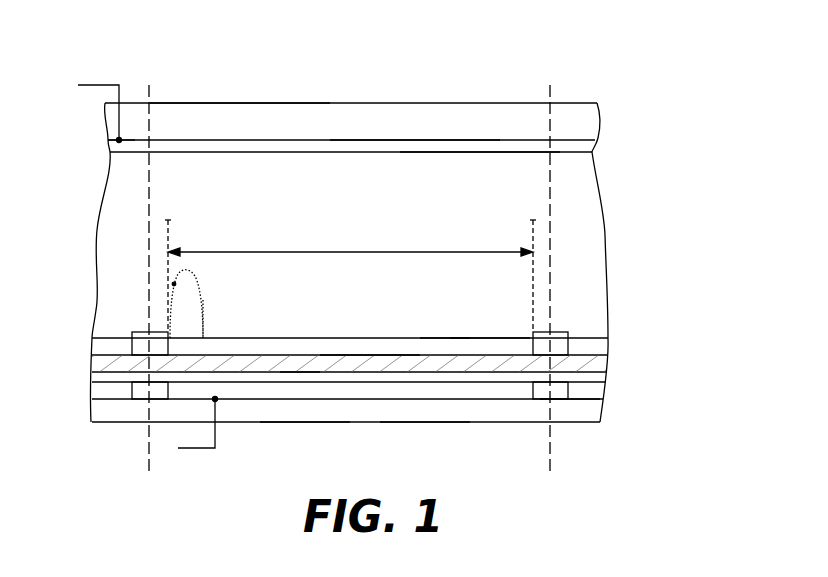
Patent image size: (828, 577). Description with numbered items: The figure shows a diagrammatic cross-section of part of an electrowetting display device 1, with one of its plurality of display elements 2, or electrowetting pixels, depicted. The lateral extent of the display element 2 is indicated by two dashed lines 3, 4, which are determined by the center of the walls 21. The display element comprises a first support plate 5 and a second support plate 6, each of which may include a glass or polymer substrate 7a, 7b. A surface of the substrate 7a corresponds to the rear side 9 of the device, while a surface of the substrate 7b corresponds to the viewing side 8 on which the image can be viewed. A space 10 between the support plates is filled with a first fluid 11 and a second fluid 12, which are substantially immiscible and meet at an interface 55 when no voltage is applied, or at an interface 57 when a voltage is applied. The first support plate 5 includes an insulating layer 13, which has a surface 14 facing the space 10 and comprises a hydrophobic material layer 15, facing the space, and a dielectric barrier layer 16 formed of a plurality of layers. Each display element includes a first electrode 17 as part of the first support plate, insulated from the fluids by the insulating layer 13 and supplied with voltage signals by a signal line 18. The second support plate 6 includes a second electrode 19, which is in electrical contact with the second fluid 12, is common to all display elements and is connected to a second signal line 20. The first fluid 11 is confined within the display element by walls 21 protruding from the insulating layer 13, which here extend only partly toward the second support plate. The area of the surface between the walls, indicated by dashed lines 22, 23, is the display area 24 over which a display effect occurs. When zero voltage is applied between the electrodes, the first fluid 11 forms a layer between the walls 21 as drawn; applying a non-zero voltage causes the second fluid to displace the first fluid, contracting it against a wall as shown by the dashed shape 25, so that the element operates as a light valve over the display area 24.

The electrowetting display device 1 is at (654, 80).
The display element 2 is at (331, 67).
The dashed line 3 is at (151, 88).
The dashed line 4 is at (551, 88).
The first support plate 5 is at (660, 338).
The second support plate 6 is at (613, 103).
The substrate 7a is at (578, 424).
The substrate 7b is at (490, 118).
The viewing side 8 is at (240, 103).
The rear side 9 is at (305, 424).
The space 10 is at (418, 165).
The first fluid 11 is at (499, 346).
The second fluid 12 is at (597, 229).
The insulating layer 13 is at (612, 355).
The surface 14 is at (400, 355).
The hydrophobic material layer 15 is at (350, 355).
The barrier layer 16 is at (298, 372).
The first electrode 17 is at (422, 424).
The signal line 18 is at (198, 450).
The second electrode 19 is at (137, 146).
The second signal line 20 is at (95, 84).
The walls 21 is at (140, 345).
The dashed line 22 is at (532, 222).
The dashed line 23 is at (169, 222).
The display area 24 is at (350, 240).
The dashed shape 25 is at (174, 284).
The interface 55 is at (447, 341).
The interface 57 is at (204, 308).